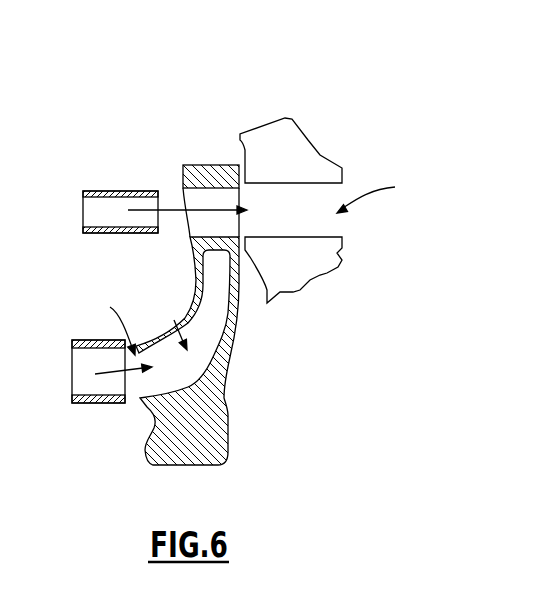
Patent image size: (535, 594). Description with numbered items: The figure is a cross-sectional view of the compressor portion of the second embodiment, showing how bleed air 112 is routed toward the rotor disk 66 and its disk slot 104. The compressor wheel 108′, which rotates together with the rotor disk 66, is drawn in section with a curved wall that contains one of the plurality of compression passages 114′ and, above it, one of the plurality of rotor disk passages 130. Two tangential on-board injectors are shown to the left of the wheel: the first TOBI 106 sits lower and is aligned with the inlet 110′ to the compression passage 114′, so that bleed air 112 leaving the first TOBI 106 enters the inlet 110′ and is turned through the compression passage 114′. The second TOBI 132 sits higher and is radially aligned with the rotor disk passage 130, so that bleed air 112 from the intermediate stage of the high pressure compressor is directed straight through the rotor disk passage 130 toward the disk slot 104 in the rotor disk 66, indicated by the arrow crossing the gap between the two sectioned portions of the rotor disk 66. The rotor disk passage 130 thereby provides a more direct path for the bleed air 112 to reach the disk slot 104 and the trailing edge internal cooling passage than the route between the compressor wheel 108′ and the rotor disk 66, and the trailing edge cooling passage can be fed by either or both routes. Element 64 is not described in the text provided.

The turbine blade airfoil section 64 is at (300, 138).
The rotor disk 66 is at (316, 262).
The disk slot 104 is at (385, 195).
The first TOBI 106 is at (82, 341).
The compressor wheel 108′ is at (192, 302).
The inlet 110′ is at (99, 325).
The bleed air 112 is at (170, 213).
The compression passage 114′ is at (175, 320).
The rotor disk passage 130 is at (170, 180).
The second TOBI 132 is at (102, 190).